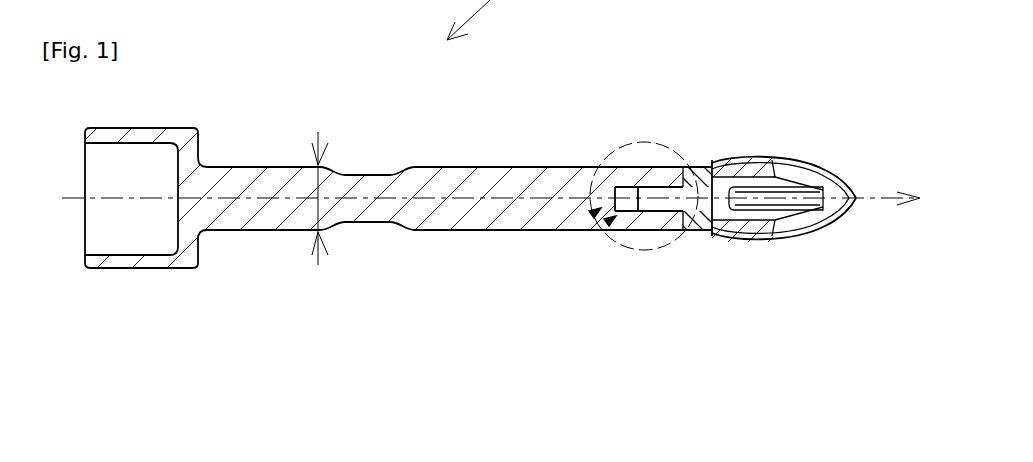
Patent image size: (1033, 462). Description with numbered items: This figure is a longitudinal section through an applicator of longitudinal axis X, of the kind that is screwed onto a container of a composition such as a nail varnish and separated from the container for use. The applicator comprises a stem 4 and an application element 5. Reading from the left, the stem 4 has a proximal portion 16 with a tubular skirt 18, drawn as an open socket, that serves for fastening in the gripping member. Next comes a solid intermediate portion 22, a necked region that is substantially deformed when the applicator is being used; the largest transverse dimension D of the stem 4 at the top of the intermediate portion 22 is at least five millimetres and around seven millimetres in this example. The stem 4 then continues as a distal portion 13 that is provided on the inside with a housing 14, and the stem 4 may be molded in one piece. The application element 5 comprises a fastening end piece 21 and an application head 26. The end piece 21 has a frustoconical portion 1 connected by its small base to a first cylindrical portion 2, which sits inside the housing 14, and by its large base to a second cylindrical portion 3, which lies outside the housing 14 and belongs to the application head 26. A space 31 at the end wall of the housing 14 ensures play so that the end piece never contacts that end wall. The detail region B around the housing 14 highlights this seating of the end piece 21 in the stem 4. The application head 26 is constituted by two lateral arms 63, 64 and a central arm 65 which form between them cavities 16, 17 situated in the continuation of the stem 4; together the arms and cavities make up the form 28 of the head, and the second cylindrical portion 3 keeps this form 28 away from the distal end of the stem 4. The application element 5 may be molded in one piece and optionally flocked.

The frustoconical portion 1 is at (693, 177).
The first cylindrical portion 2 is at (642, 182).
The second cylindrical portion 3 is at (707, 180).
The stem 4 is at (372, 231).
The application element 5 is at (857, 316).
The distal portion 13 is at (408, 99).
The housing 14 is at (592, 211).
The proximal portion / cavity 16 is at (332, 99).
The cavity 17 is at (750, 220).
The tubular skirt 18 is at (150, 262).
The fastening end piece 21 is at (693, 258).
The intermediate portion 22 is at (338, 99).
The application head 26 is at (795, 172).
The form 28 is at (857, 275).
The space 31 is at (607, 222).
The lateral arm 63 is at (787, 237).
The lateral arm 64 is at (798, 172).
The central arm 65 is at (808, 210).
The detail region B is at (636, 152).
The largest transverse dimension D is at (318, 205).
The longitudinal axis X is at (912, 187).